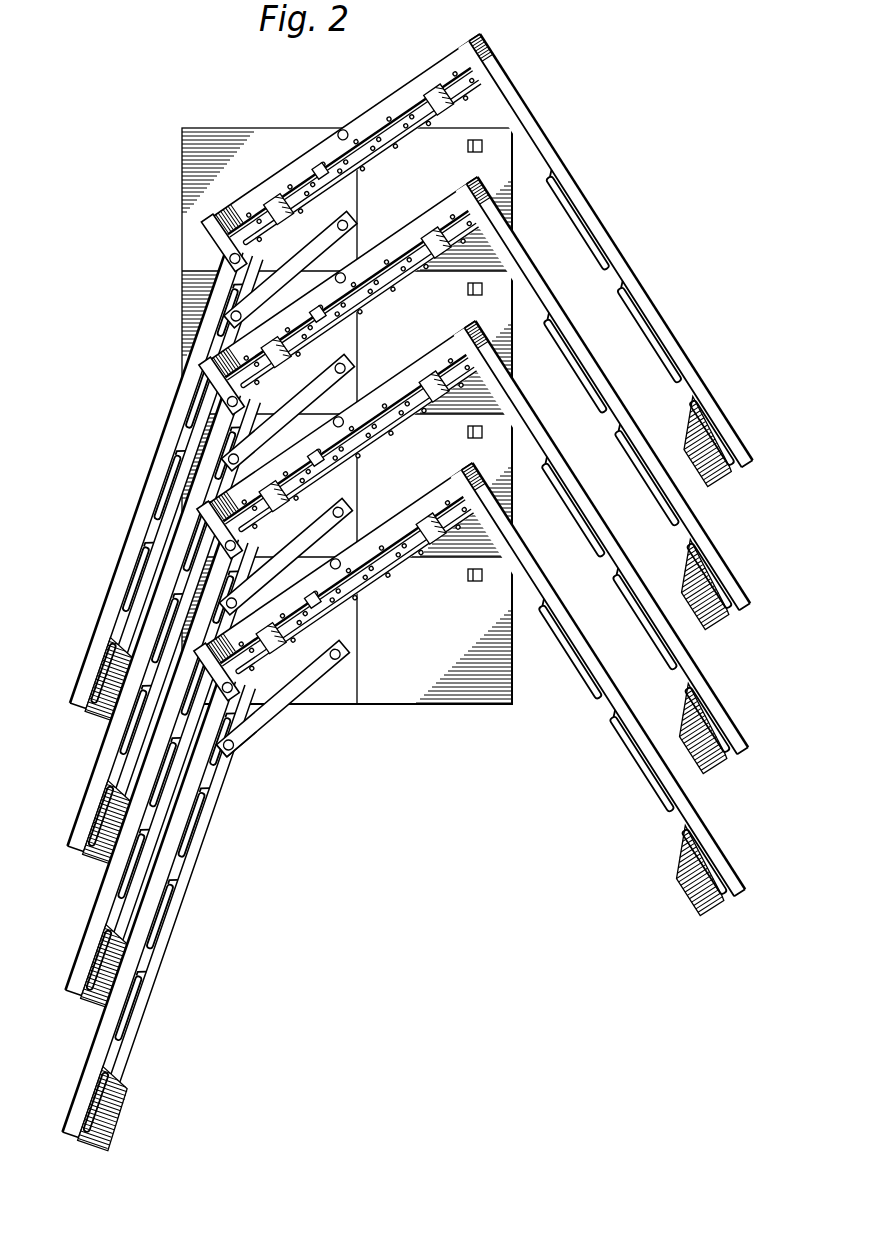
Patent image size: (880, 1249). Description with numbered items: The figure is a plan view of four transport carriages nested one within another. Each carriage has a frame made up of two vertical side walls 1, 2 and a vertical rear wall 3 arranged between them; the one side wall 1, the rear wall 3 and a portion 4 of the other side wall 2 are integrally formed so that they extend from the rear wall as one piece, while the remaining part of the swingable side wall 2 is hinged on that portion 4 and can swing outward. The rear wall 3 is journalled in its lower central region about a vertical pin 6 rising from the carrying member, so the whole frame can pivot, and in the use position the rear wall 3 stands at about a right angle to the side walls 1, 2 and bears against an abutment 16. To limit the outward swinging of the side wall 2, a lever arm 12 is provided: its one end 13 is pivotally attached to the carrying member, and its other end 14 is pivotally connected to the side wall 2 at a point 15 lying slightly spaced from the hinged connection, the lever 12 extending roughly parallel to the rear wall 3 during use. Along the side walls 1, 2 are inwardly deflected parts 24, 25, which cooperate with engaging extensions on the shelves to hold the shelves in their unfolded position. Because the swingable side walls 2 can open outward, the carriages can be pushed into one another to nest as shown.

The side wall 1 is at (607, 683).
The swingable side wall 2 is at (154, 910).
The rear wall 3 is at (379, 108).
The portion of the other side wall 4 is at (208, 243).
The vertical pin 6 is at (341, 130).
The lever arm 12 is at (282, 698).
The end of lever 13 is at (339, 692).
The end of lever 14 is at (253, 745).
The connection point on side wall 15 is at (236, 766).
The abutment 16 is at (468, 583).
The inwardly deflected part 24 is at (404, 987).
The inwardly deflected part 25 is at (396, 820).